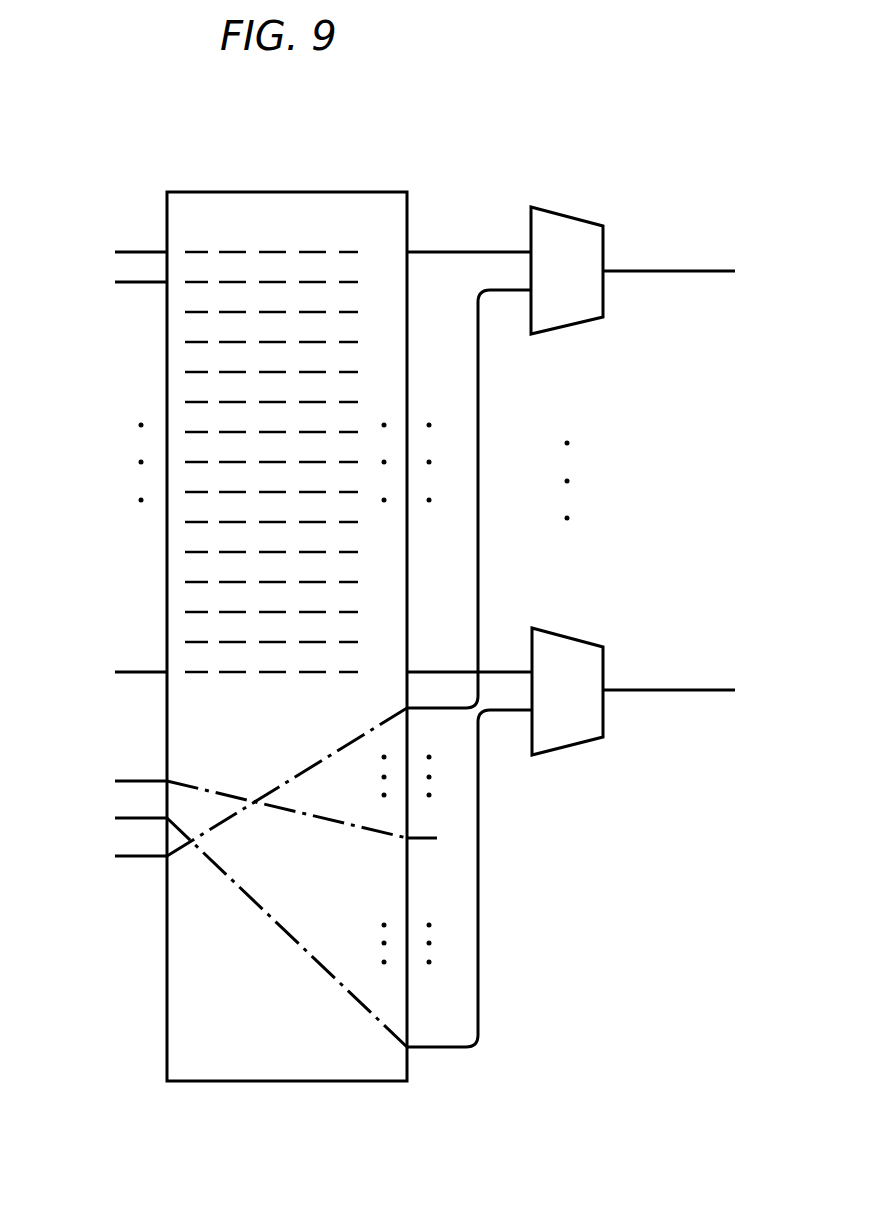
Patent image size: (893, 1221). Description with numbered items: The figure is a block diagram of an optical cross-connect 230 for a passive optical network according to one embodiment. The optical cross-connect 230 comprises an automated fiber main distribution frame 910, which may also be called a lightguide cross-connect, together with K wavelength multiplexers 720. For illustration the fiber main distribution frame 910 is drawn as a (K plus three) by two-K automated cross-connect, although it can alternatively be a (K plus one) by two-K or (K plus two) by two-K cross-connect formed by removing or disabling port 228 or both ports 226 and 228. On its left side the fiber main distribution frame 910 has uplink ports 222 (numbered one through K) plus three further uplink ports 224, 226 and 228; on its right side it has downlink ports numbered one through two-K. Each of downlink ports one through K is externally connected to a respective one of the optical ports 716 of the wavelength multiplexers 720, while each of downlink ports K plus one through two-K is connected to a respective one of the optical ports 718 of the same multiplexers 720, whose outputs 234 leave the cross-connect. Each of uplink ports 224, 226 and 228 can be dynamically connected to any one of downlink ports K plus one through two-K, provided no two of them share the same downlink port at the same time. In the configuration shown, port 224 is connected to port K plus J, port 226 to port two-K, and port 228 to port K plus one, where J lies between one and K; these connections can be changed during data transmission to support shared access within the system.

The optical cross-connect (OXC) 230 is at (305, 102).
The automated fiber main distribution frame (FMDF) 910 is at (340, 192).
The uplink ports 222 is at (140, 672).
The optical ports of wavelength multiplexers 716 is at (470, 252).
The optical ports of wavelength multiplexers 718 is at (505, 290).
The wavelength multiplexers 720 is at (573, 212).
The output optical fibers 234 is at (672, 271).
The uplink port 224 is at (140, 781).
The uplink port 226 is at (128, 818).
The uplink port 228 is at (140, 856).